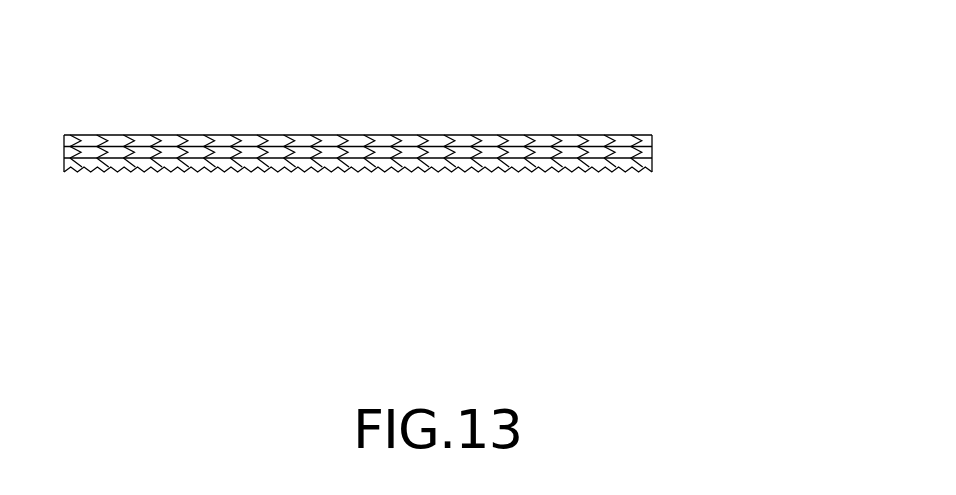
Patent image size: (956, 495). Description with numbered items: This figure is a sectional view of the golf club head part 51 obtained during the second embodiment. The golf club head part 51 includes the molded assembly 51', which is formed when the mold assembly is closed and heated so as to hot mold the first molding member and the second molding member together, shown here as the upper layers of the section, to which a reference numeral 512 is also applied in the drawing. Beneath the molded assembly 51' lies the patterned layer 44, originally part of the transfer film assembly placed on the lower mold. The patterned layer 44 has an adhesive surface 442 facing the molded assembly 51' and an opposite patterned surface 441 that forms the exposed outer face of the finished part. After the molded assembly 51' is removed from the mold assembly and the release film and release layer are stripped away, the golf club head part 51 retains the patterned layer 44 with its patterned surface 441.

The golf club head part 51 is at (439, 148).
The molded assembly 51' is at (406, 94).
The top layer 512 is at (497, 138).
The patterned layer 44 is at (402, 168).
The adhesive surface 442 is at (178, 160).
The patterned surface 441 is at (172, 172).